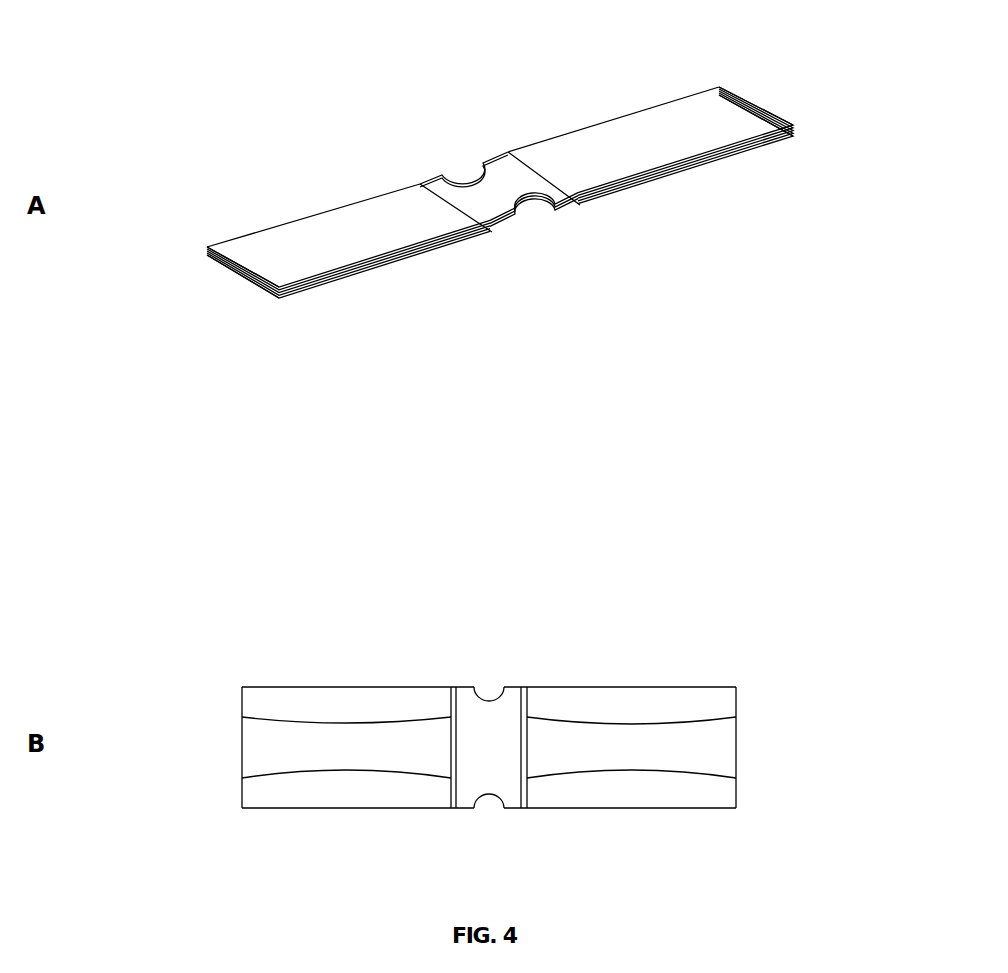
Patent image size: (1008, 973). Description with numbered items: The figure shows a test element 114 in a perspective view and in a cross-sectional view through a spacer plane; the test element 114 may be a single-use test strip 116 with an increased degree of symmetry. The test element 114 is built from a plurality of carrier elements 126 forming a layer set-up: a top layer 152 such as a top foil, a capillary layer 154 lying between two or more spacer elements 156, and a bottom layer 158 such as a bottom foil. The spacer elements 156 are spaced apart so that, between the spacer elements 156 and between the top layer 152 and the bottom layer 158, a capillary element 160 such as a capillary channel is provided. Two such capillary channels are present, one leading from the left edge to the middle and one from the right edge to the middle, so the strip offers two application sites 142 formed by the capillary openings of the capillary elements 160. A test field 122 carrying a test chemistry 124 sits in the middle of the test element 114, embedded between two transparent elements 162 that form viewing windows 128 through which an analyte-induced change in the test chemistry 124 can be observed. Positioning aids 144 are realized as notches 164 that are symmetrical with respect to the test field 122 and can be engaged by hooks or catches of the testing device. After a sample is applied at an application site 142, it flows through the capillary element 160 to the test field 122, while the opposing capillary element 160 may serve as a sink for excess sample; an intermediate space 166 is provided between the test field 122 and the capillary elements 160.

The test element 114 is at (278, 130).
The single-use test strip 116 is at (493, 450).
The test field 122 is at (512, 165).
The test chemistry 124 is at (485, 473).
The carrier element 126 is at (393, 270).
The viewing window 128 is at (437, 175).
The application site 142 is at (760, 105).
The positioning aid 144 is at (465, 178).
The top layer 152 is at (275, 238).
The capillary layer 154 is at (333, 288).
The spacer element 156 is at (206, 257).
The bottom layer 158 is at (313, 293).
The capillary element 160 is at (247, 283).
The transparent element 162 is at (488, 462).
The notch 164 is at (485, 487).
The intermediate space 166 is at (453, 733).